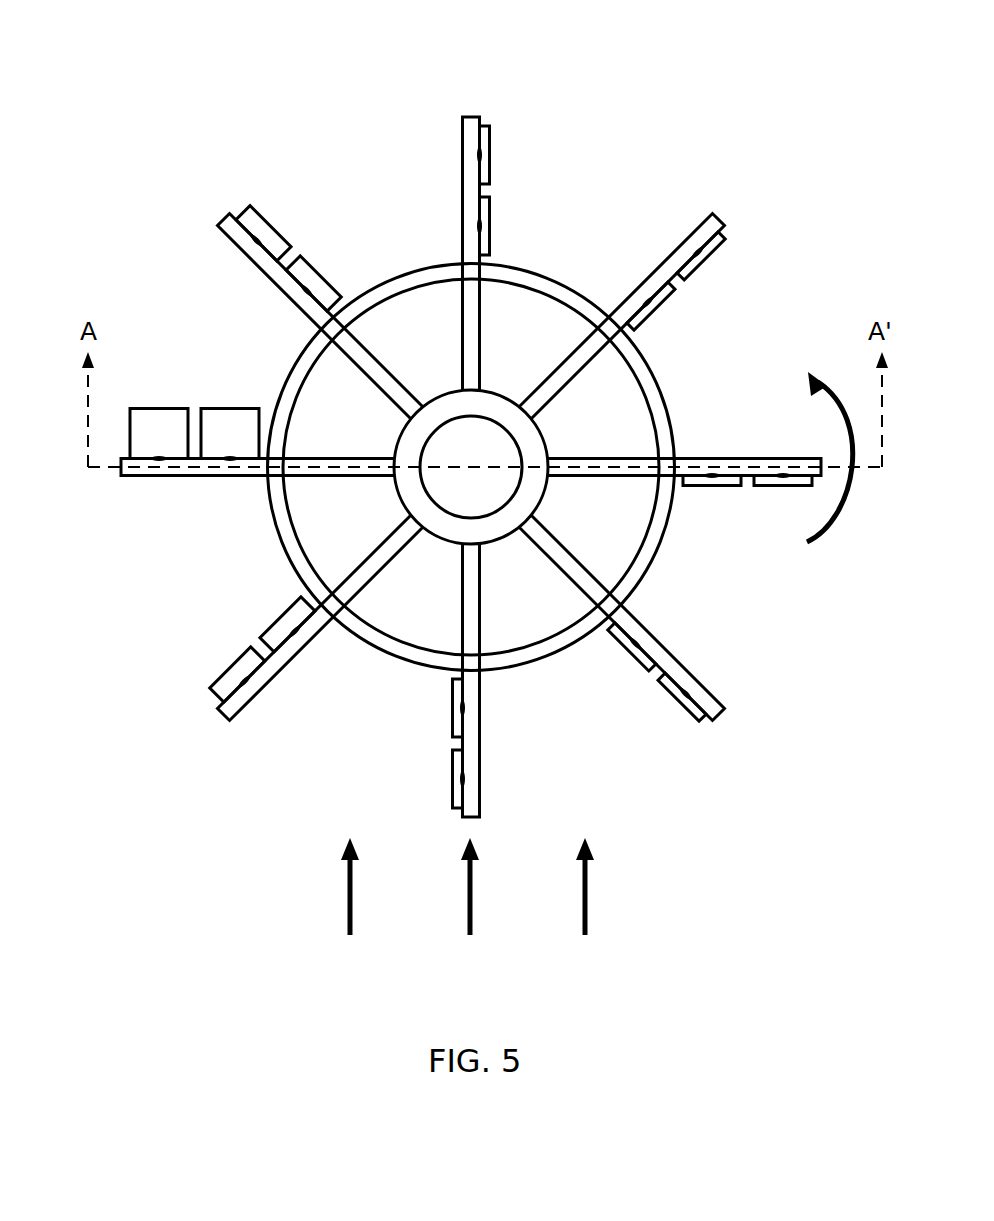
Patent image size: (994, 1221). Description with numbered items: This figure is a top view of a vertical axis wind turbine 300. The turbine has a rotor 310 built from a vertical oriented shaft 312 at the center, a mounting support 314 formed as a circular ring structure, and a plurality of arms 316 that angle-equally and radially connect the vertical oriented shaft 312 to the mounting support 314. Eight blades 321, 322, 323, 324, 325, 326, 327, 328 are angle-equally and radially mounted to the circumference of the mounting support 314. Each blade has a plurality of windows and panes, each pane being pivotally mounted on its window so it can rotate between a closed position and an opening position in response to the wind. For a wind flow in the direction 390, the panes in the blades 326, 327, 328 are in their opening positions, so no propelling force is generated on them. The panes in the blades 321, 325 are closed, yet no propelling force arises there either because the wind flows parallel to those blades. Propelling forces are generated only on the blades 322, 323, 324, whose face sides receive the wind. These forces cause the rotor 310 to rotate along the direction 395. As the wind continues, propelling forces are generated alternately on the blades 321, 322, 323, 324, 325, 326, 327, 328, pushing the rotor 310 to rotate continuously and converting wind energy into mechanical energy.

The vertical axis wind turbine 300 is at (498, 36).
The rotor 310 is at (386, 258).
The vertical oriented shaft 312 is at (495, 527).
The mounting support 314 is at (537, 652).
The arms 316 is at (593, 467).
The blade 321 is at (472, 768).
The blade 322 is at (675, 670).
The blade 323 is at (698, 465).
The blade 324 is at (655, 277).
The blade 325 is at (470, 177).
The blade 326 is at (288, 275).
The blade 327 is at (148, 465).
The blade 328 is at (258, 680).
The wind flow direction 390 is at (467, 913).
The rotation direction 395 is at (804, 473).